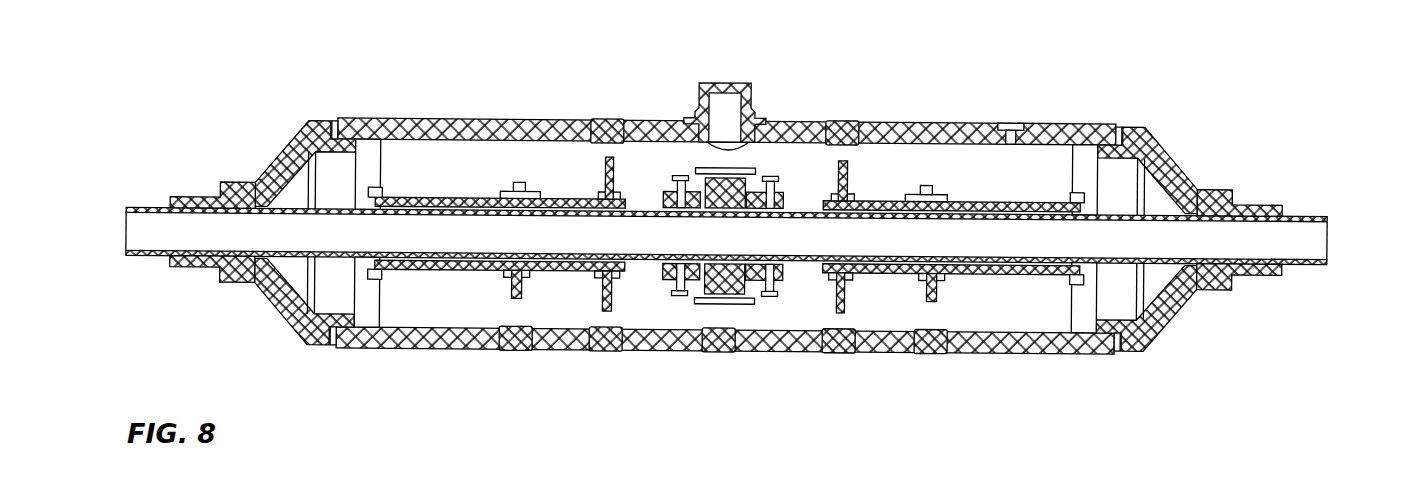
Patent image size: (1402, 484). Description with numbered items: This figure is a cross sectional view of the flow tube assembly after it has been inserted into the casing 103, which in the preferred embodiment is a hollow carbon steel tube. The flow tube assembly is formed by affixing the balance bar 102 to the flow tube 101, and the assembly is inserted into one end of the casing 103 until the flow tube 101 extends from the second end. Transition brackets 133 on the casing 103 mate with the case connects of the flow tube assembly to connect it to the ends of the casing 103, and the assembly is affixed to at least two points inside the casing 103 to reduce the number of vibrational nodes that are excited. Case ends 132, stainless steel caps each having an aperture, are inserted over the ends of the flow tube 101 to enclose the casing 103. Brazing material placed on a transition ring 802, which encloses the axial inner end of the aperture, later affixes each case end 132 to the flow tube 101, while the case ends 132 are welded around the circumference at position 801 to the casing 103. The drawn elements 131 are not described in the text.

The flow tube 101 is at (1307, 263).
The balance bar 102 is at (413, 199).
The casing 103 is at (518, 121).
The support block 131 is at (598, 120).
The case end 132 is at (279, 152).
The transition bracket 133 is at (374, 303).
The weld position 801 is at (333, 133).
The transition ring 802 is at (232, 282).